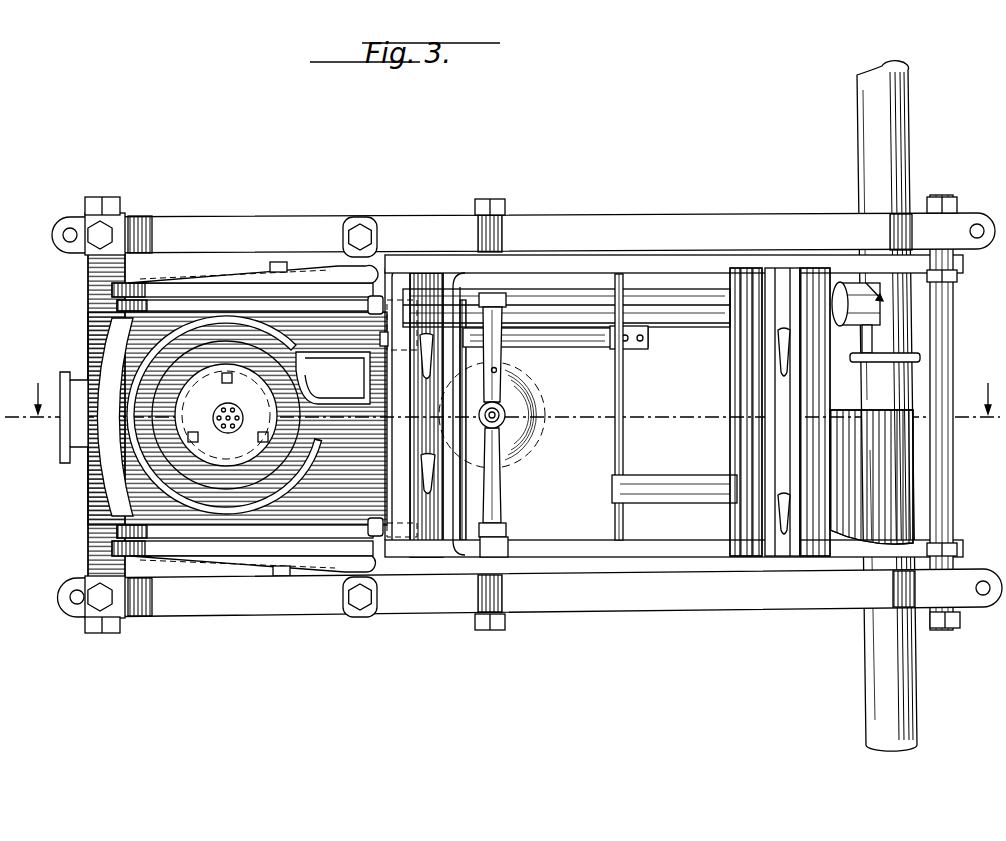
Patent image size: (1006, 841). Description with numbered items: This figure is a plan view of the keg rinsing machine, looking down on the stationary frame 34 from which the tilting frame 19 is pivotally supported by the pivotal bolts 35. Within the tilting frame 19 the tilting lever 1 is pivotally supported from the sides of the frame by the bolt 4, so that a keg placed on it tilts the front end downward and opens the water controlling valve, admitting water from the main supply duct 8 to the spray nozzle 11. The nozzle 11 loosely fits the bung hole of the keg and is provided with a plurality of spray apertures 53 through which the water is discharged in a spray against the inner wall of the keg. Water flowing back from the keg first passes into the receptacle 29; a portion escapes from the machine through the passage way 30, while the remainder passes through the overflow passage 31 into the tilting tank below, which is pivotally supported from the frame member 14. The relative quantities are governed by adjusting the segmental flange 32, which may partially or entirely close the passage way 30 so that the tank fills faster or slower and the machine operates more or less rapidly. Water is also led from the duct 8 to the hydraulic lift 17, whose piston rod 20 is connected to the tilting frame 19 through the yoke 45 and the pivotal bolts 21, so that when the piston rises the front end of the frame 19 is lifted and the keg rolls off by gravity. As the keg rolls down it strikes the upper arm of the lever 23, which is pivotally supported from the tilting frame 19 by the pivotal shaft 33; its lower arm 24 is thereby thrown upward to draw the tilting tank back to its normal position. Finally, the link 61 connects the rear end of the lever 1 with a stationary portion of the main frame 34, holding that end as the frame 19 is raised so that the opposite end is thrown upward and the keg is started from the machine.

The tilting lever 1 is at (160, 320).
The bolt 4 is at (283, 264).
The duct 8 is at (551, 305).
The spray nozzle 11 is at (222, 430).
The frame member 14 is at (86, 464).
The hydraulic lift 17 is at (520, 442).
The tilting frame 19 is at (643, 268).
The piston rod 20 is at (500, 414).
The pivotal bolts 21 is at (500, 303).
The lever 23 is at (745, 432).
The lower arm 24 is at (545, 345).
The receptacle 29 is at (186, 480).
The passage way 30 is at (336, 452).
The overflow passage 31 is at (330, 402).
The segmental flange 32 is at (303, 454).
The pivotal shaft 33 is at (623, 450).
The stationary frame 34 is at (527, 415).
The pivotal bolts 35 is at (957, 272).
The yoke 45 is at (497, 371).
The spray apertures 53 is at (232, 412).
The link 61 is at (383, 305).